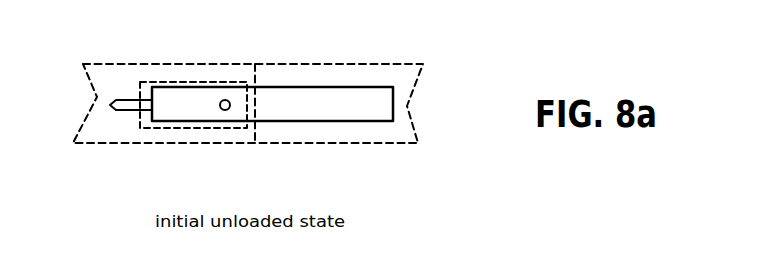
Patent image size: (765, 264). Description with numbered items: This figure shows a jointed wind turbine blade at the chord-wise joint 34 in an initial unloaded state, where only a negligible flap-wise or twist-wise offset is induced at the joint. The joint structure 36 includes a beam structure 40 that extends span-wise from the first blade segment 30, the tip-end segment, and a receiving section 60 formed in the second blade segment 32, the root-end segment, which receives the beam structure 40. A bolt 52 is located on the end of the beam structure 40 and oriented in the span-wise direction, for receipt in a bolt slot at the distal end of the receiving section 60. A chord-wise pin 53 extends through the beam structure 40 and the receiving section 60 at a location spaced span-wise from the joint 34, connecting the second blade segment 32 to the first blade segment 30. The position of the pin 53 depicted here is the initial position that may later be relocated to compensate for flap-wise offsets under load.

The first blade segment 30 is at (246, 111).
The second blade segment 32 is at (100, 144).
The chord-wise joint 34 is at (247, 62).
The joint structure 36 is at (260, 144).
The beam structure 40 is at (335, 122).
The bolt 52 is at (127, 100).
The chord-wise pin 53 is at (225, 110).
The receiving section 60 is at (185, 82).